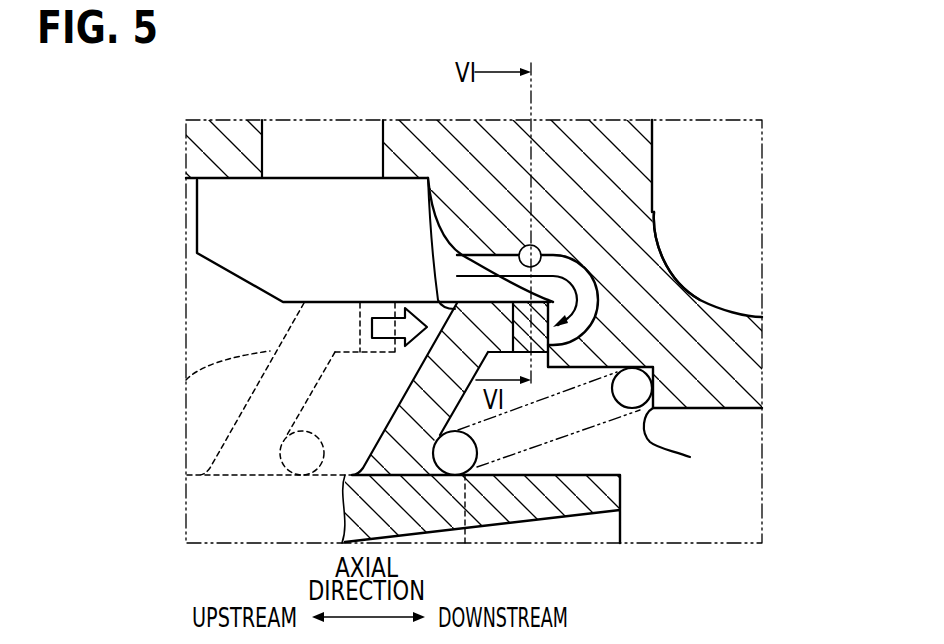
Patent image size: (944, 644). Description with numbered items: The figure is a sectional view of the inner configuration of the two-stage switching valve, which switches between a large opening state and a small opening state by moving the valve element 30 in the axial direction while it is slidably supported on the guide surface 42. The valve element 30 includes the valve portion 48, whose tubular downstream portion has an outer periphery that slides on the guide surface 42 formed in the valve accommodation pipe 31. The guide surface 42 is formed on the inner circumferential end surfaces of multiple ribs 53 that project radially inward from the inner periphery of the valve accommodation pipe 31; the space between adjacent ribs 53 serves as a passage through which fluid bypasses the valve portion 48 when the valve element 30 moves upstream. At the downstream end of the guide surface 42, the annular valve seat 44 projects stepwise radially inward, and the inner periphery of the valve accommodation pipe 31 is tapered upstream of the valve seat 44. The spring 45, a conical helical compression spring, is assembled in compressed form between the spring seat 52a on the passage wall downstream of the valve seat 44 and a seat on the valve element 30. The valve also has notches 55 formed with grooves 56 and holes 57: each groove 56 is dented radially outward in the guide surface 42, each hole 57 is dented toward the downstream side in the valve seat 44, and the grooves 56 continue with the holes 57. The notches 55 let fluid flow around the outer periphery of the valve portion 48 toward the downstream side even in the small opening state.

The valve accommodation pipe 31 is at (672, 333).
The guide surface 42 is at (420, 178).
The valve seat 44 is at (533, 353).
The spring 45 is at (597, 425).
The valve portion 48 is at (224, 389).
The valve element 30 is at (398, 400).
The spring seat 52a is at (690, 457).
The ribs 53 is at (352, 233).
The notches 55 is at (613, 166).
The groove 56 is at (534, 247).
The hole 57 is at (654, 212).